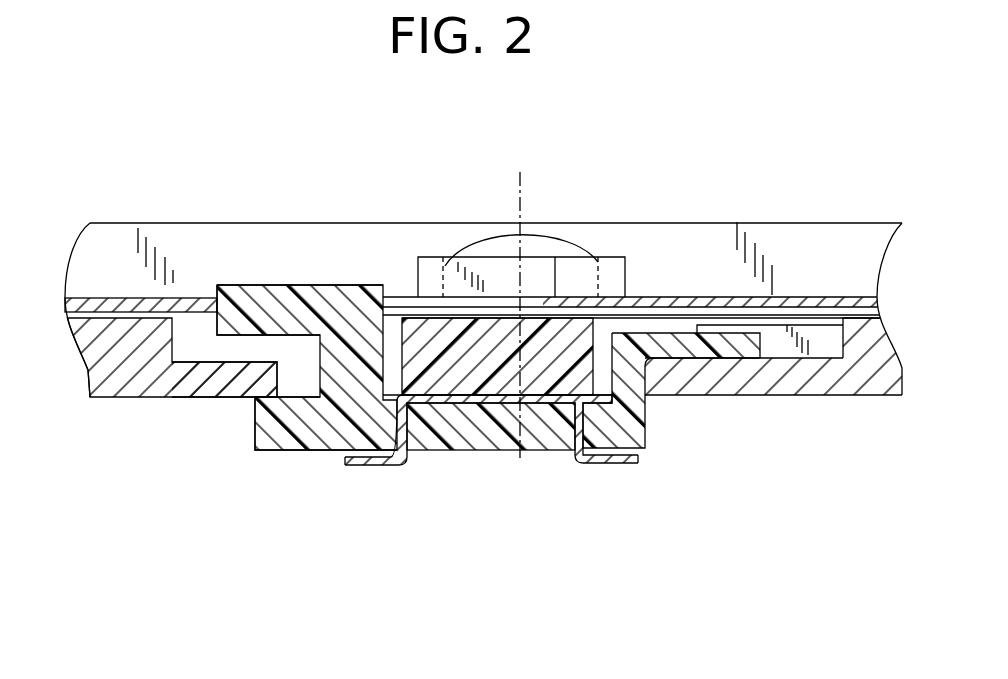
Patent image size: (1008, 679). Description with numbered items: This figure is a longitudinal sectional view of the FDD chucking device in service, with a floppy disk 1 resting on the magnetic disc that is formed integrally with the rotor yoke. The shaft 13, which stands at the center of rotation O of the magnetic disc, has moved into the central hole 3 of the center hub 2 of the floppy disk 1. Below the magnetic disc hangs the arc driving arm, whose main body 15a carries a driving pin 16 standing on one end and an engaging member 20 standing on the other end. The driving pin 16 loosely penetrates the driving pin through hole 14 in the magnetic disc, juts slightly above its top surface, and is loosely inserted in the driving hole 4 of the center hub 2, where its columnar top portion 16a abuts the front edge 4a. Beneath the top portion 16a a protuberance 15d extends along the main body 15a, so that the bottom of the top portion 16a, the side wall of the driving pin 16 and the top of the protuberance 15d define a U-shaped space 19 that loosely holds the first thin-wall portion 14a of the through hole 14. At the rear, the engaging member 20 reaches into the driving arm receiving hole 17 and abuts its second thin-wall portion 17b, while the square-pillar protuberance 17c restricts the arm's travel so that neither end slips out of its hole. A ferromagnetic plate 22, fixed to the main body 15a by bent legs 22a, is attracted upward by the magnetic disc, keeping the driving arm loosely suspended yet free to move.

The floppy disk 1 is at (182, 210).
The center hub 2 is at (120, 298).
The central hole 3 is at (622, 275).
The driving hole 4 is at (538, 296).
The front edge 4a is at (247, 298).
The shaft 13 is at (570, 257).
The driving pin through hole 14 is at (395, 340).
The first thin-wall portion 14a is at (222, 385).
The main body 15a is at (443, 418).
The protuberance 15d is at (283, 420).
The driving pin 16 is at (342, 270).
The top portion 16a is at (287, 298).
The driving arm receiving hole 17 is at (597, 332).
The second thin-wall portion 17b is at (793, 382).
The protuberance 17c is at (812, 323).
The U-shaped space 19 is at (313, 422).
The engaging member 20 is at (728, 353).
The ferromagnetic plate 22 is at (488, 402).
The legs 22a is at (373, 462).
The center of rotation O is at (520, 188).